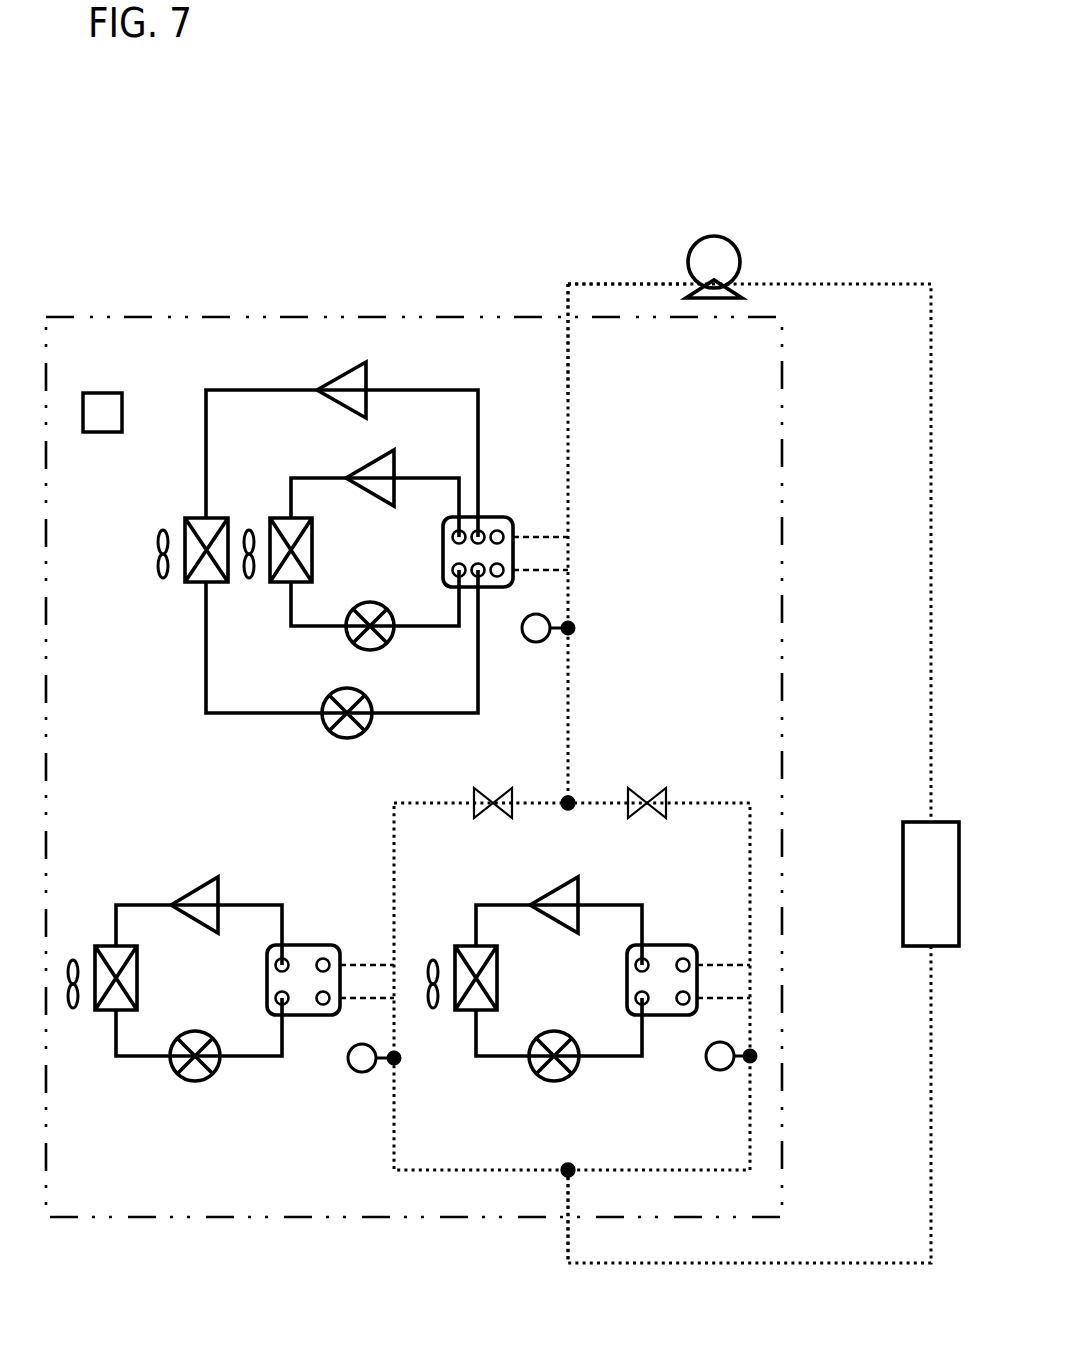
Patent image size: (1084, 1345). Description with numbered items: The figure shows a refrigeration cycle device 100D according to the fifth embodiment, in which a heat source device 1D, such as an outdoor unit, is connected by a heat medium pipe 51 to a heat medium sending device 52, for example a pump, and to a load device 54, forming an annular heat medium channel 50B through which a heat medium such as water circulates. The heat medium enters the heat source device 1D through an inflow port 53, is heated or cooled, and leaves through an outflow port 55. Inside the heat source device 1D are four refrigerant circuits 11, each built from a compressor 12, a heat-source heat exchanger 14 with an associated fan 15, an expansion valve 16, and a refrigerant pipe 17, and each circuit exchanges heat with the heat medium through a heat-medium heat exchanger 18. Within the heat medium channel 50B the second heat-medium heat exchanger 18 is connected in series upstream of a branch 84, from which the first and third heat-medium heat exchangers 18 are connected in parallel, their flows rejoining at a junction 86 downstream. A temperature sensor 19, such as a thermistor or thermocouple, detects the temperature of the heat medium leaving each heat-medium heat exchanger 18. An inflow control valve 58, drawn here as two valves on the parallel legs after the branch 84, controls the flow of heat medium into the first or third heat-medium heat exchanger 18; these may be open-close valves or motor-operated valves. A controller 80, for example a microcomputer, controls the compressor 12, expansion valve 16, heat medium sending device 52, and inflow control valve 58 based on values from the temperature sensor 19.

The refrigeration cycle device 100D is at (258, 192).
The heat source device 1D is at (146, 316).
The refrigerant circuit 11 is at (478, 390).
The compressor 12 is at (342, 374).
The heat-source heat exchanger 14 is at (210, 518).
The fan 15 is at (163, 580).
The expansion valve 16 is at (326, 700).
The refrigerant pipe 17 is at (606, 1104).
The heat-medium heat exchanger 18 is at (497, 517).
The temperature sensor 19 is at (530, 644).
The heat medium channel 50B is at (778, 282).
The heat medium pipe 51 is at (618, 282).
The heat medium sending device 52 is at (696, 244).
The inflow port 53 is at (560, 308).
The load device 54 is at (911, 950).
The outflow port 55 is at (565, 1222).
The inflow control valve 58 is at (496, 790).
The controller 80 is at (101, 433).
The branch 84 is at (576, 800).
The junction 86 is at (576, 1176).